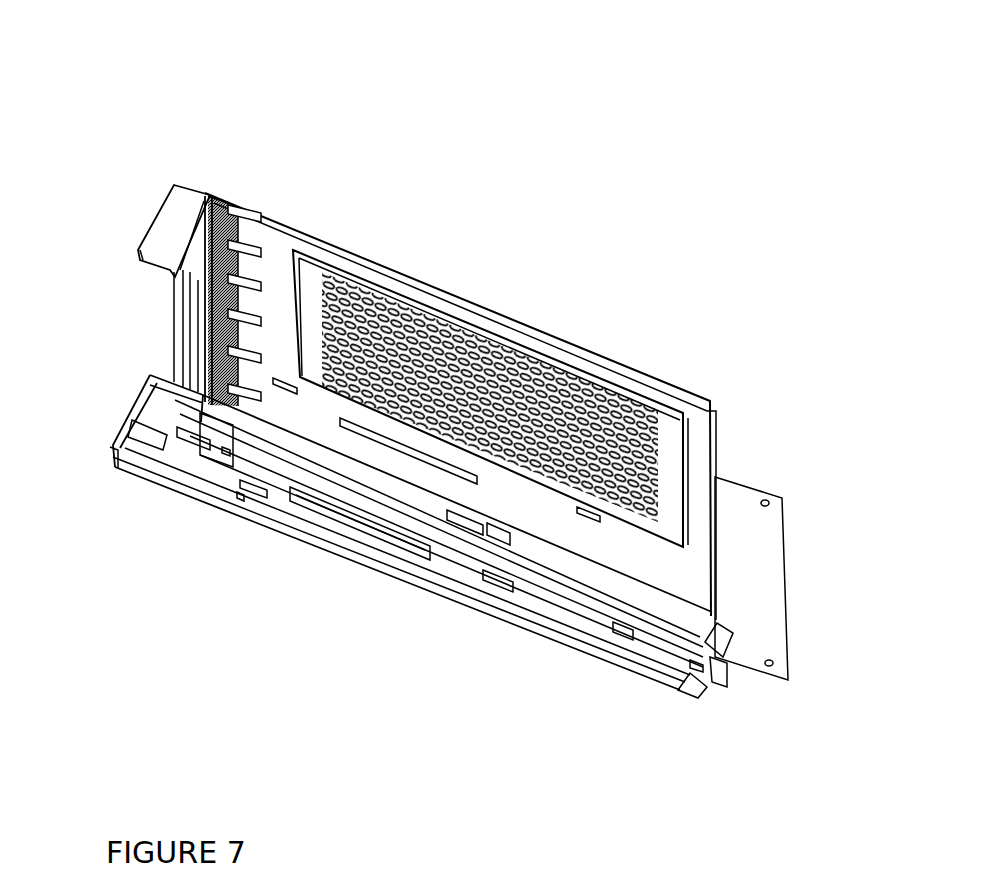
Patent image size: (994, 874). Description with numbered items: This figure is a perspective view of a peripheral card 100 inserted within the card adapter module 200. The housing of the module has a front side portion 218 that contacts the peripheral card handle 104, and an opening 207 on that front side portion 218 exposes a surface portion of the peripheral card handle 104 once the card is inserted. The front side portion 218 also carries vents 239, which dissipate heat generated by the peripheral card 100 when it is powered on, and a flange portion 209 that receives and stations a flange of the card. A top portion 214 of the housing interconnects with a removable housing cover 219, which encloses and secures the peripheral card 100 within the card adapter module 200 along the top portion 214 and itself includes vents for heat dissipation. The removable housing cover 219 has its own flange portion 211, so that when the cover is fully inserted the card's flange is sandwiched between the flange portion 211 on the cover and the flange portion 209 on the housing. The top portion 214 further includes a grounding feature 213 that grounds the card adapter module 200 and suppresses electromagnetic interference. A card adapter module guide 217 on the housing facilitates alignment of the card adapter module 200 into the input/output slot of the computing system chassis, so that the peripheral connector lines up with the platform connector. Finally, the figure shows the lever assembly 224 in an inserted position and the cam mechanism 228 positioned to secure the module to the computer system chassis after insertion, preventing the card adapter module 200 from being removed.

The peripheral card 100 is at (757, 535).
The peripheral card handle 104 is at (200, 304).
The card adapter module 200 is at (180, 47).
The opening 207 is at (197, 326).
The flange portion 209 is at (214, 193).
The flange portion 211 is at (155, 238).
The grounding feature 213 is at (242, 240).
The top portion 214 is at (455, 297).
The card adapter module guide 217 is at (560, 632).
The front side portion 218 is at (187, 336).
The removable housing cover 219 is at (668, 560).
The lever assembly 224 is at (117, 441).
The cam mechanism 228 is at (483, 530).
The vents 239 is at (333, 380).